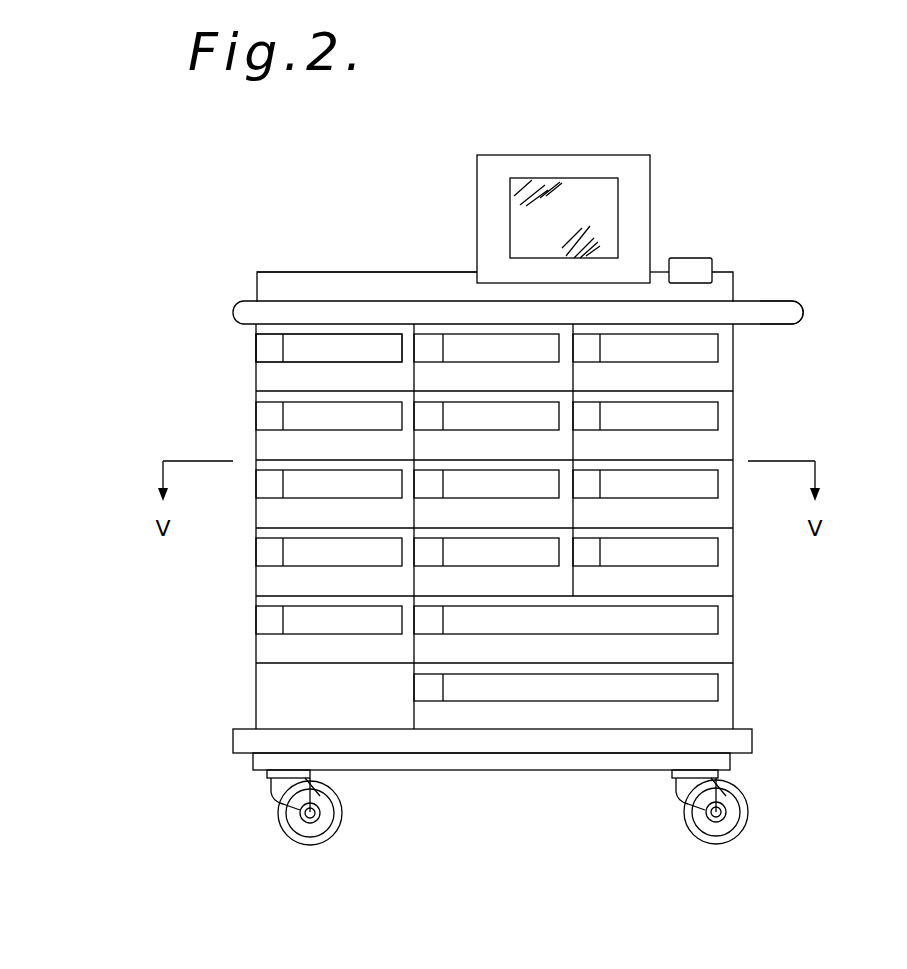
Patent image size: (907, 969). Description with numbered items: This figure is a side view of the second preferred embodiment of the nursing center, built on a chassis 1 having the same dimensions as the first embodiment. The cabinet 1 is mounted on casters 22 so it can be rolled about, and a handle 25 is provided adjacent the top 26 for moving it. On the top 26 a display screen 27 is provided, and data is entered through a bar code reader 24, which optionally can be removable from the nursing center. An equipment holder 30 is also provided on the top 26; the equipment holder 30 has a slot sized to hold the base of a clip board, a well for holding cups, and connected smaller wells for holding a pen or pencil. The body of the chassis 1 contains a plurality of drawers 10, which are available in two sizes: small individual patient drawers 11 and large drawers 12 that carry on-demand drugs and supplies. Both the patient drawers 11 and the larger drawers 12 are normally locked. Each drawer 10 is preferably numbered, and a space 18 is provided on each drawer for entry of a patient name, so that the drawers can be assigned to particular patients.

The chassis 1 is at (240, 362).
The drawers 10 is at (277, 649).
The small individual patient drawers 11 is at (305, 378).
The large drawers 12 is at (697, 710).
The space 18 is at (688, 415).
The casters 22 is at (303, 797).
The bar code reader 24 is at (693, 263).
The handle 25 is at (788, 306).
The top 26 is at (288, 300).
The display screen 27 is at (488, 208).
The equipment holder 30 is at (362, 282).